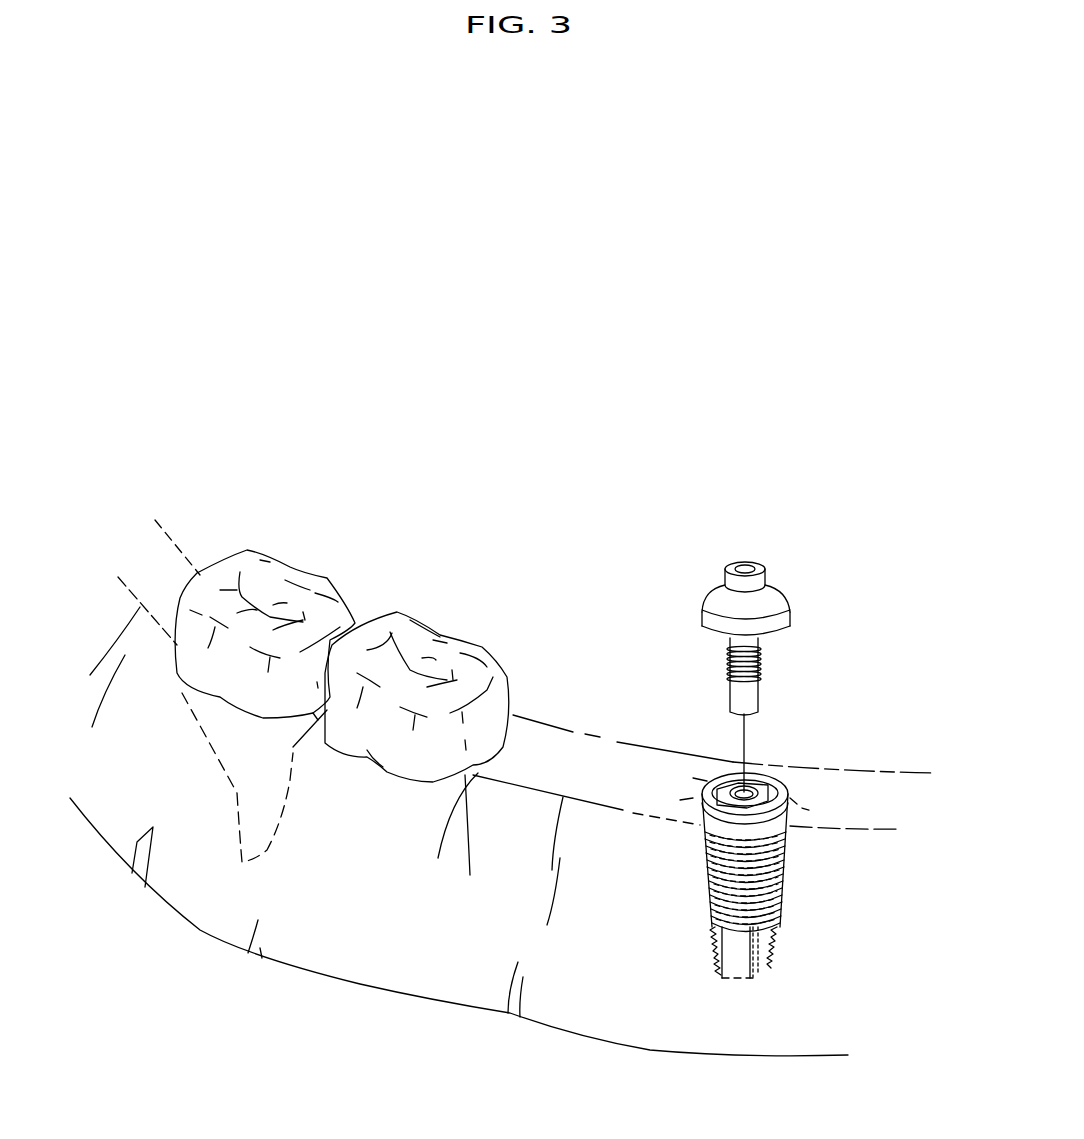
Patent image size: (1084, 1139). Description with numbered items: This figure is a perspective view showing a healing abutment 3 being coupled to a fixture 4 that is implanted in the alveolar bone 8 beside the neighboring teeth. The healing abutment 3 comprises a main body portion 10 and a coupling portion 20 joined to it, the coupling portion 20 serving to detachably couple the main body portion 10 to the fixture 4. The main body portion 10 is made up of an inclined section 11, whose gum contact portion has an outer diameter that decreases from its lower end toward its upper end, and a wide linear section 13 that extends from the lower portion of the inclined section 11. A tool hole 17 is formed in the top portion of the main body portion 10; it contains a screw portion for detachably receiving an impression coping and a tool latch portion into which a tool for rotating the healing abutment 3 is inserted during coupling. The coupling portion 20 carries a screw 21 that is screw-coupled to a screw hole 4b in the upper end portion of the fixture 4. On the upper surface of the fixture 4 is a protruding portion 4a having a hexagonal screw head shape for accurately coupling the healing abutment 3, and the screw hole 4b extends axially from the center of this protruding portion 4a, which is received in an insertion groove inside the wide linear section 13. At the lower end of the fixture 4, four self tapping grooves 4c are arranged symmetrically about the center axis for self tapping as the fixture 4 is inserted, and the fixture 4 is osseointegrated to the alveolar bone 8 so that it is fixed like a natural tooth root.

The healing abutment 3 is at (760, 660).
The main body portion 10 is at (785, 582).
The inclined section 11 is at (771, 591).
The wide linear section 13 is at (772, 628).
The tool hole 17 is at (726, 568).
The coupling portion 20 is at (755, 715).
The screw 21 is at (728, 673).
The fixture 4 is at (750, 875).
The protruding portion 4a is at (787, 800).
The screw hole 4b is at (707, 793).
The self tapping grooves 4c is at (735, 956).
The alveolar bone 8 is at (722, 1027).